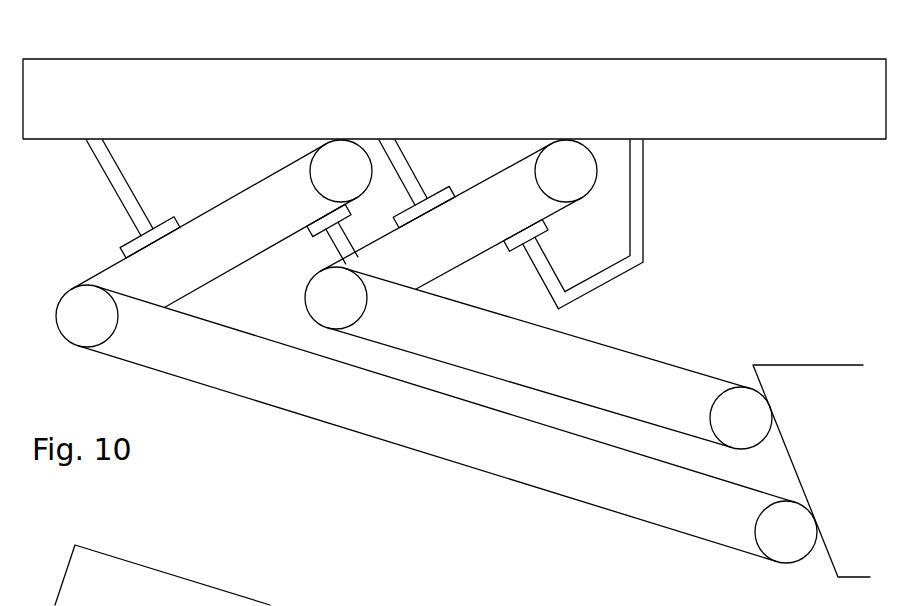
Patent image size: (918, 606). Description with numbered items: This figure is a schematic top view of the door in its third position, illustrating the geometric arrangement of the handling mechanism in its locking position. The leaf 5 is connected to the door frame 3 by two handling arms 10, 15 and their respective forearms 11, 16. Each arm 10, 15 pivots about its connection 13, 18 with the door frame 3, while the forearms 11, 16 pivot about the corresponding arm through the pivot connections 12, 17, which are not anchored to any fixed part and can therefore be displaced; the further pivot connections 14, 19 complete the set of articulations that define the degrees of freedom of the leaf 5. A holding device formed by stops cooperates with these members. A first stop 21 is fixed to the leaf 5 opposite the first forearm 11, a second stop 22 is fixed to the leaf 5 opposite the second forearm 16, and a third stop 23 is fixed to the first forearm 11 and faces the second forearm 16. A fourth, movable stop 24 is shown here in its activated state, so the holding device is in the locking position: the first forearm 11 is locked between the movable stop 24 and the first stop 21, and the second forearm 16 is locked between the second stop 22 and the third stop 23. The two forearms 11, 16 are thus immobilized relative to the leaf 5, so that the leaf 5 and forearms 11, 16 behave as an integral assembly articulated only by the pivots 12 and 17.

The door frame 3 is at (822, 383).
The leaf 5 is at (647, 82).
The first handling arm 10 is at (617, 373).
The first forearm 11 is at (454, 242).
The pivot connection 12 is at (328, 311).
The pivot connection 13 is at (748, 422).
The pivot connection 14 is at (577, 155).
The second handling arm 15 is at (436, 432).
The second forearm 16 is at (270, 217).
The pivot connection 17 is at (82, 325).
The pivot connection 18 is at (772, 552).
The pivot connection 19 is at (336, 158).
The first stop 21 is at (407, 182).
The second stop 22 is at (112, 170).
The third stop 23 is at (345, 225).
The movable stop 24 is at (635, 235).